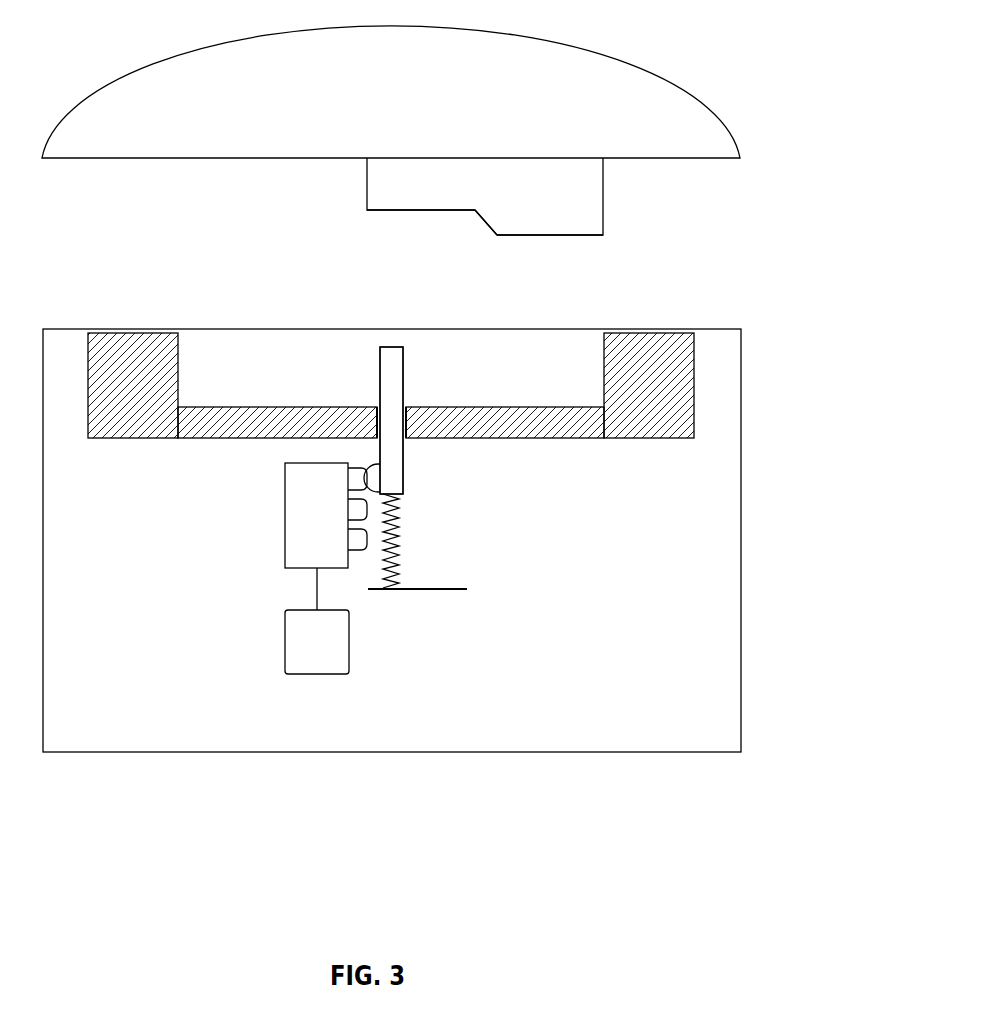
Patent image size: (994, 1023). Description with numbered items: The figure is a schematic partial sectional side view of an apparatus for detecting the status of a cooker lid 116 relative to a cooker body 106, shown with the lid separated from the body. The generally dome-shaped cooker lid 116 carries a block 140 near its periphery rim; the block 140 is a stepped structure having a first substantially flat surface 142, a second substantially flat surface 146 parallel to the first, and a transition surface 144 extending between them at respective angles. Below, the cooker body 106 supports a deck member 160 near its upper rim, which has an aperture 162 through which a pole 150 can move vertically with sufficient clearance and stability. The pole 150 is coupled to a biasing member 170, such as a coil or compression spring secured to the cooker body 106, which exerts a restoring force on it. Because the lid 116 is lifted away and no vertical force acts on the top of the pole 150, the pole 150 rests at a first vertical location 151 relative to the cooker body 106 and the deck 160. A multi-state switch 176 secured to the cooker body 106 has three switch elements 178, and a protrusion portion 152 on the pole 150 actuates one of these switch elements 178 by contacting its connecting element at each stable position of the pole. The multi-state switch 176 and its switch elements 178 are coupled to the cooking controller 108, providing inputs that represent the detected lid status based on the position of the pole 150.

The cooker lid 116 is at (685, 78).
The block 140 is at (603, 222).
The first substantially flat surface 142 is at (412, 205).
The transition surface 144 is at (487, 222).
The second substantially flat surface 146 is at (548, 233).
The cooker body 106 is at (742, 348).
The deck member 160 is at (264, 407).
The aperture 162 is at (370, 412).
The pole 150 is at (378, 346).
The first vertical location 151 is at (393, 373).
The protrusion portion 152 is at (380, 480).
The biasing member 170 is at (392, 546).
The multi-state switch 176 is at (300, 552).
The switch elements 178 is at (355, 510).
The cooking controller 108 is at (350, 650).